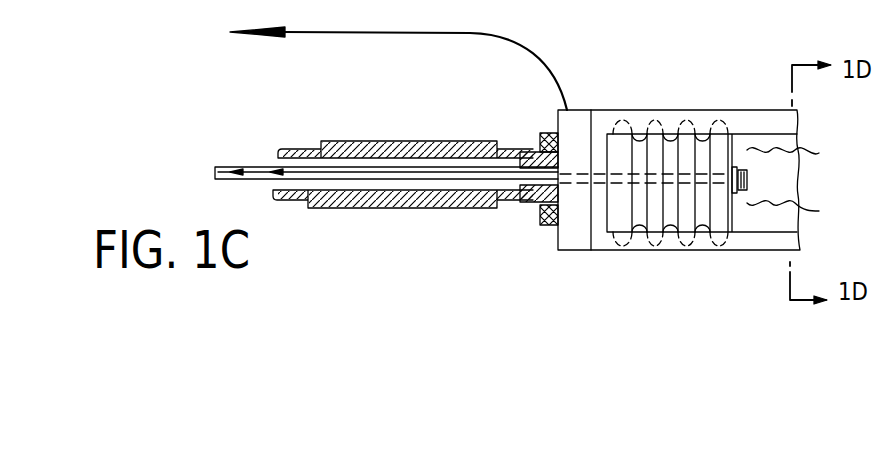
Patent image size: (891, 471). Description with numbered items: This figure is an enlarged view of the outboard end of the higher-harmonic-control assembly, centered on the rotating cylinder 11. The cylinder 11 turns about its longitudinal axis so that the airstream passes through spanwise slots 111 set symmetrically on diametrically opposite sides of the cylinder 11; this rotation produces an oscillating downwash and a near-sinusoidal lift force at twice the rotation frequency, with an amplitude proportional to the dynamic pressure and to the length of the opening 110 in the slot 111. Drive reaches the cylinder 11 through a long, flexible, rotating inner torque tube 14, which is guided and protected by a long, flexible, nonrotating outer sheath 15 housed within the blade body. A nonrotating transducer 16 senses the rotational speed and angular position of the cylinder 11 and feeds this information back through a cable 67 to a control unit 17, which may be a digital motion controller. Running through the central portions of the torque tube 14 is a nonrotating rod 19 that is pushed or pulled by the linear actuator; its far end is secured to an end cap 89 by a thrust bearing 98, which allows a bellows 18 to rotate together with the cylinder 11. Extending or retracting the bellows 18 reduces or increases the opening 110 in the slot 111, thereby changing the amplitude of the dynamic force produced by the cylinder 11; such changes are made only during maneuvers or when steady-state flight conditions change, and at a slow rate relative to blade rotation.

The control unit 17 is at (209, 27).
The cable 67 is at (369, 35).
The nonrotating rod 19 is at (223, 167).
The outer sheath 15 is at (379, 141).
The inner torque tube 14 is at (507, 141).
The nonrotating transducer 16 is at (575, 112).
The cylinder 11 is at (745, 135).
The spanwise slot 111 is at (770, 137).
The bellows 18 is at (690, 150).
The opening 110 is at (753, 228).
The thrust bearing 98 is at (797, 154).
The end cap 89 is at (800, 214).